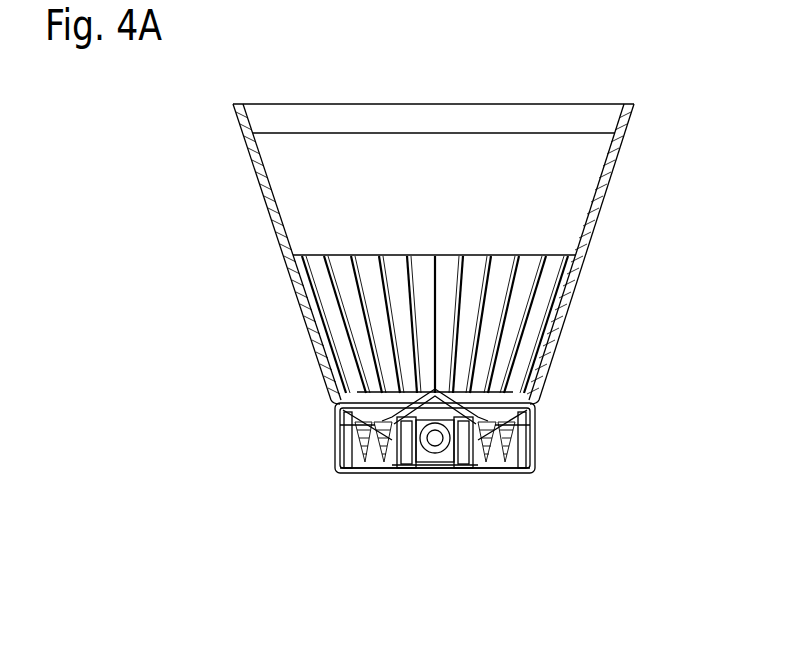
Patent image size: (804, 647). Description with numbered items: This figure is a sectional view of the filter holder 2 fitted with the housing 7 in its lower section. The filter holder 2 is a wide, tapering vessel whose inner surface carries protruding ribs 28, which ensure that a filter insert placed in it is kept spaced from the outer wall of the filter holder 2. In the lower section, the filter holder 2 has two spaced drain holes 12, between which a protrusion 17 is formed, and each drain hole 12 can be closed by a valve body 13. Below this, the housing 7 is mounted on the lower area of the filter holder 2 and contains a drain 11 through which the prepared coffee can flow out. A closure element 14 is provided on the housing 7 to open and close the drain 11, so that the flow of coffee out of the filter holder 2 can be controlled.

The filter holder 2 is at (613, 177).
The protruding ribs 28 is at (500, 325).
The drain holes 12 is at (338, 415).
The protrusion 17 is at (400, 393).
The valve body 13 is at (338, 445).
The closure element 14 is at (537, 442).
The housing 7 is at (537, 448).
The drain 11 is at (537, 473).